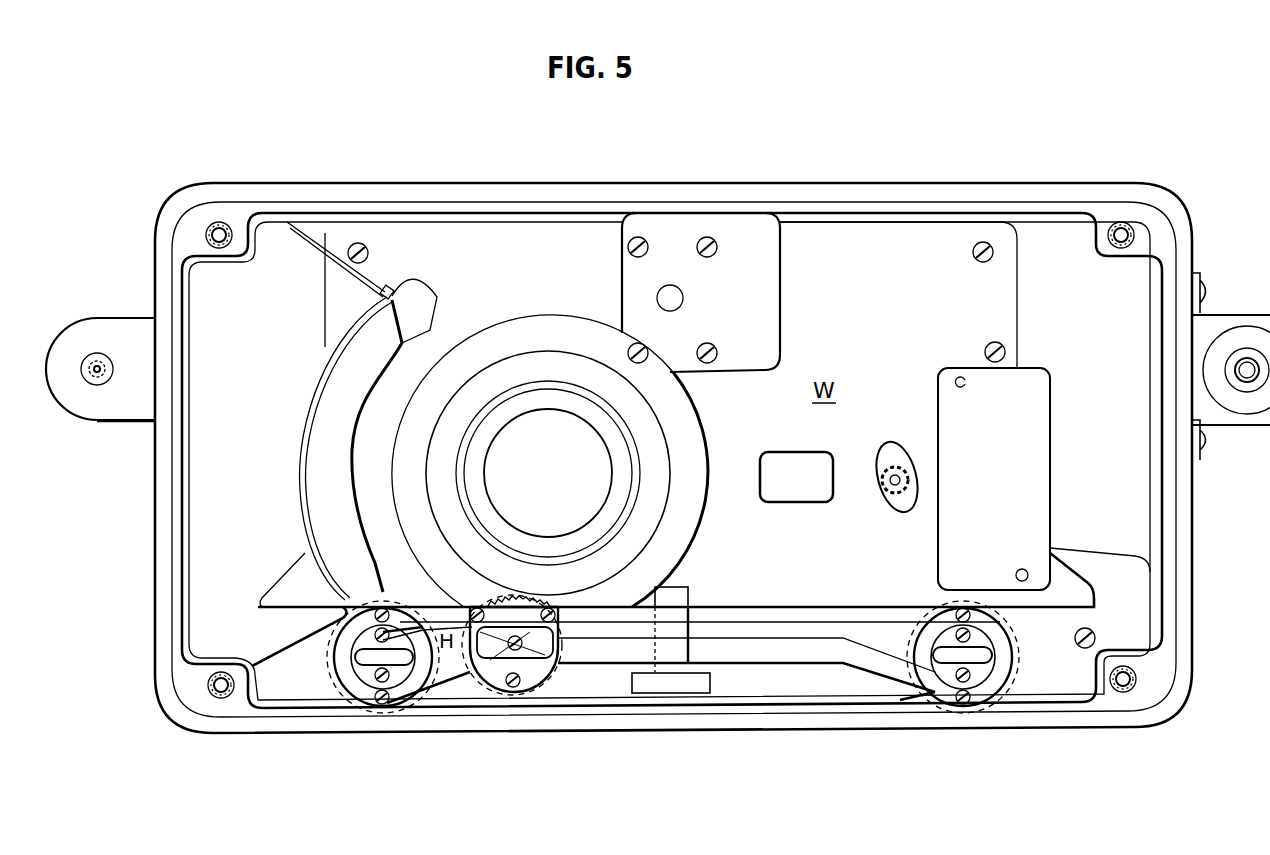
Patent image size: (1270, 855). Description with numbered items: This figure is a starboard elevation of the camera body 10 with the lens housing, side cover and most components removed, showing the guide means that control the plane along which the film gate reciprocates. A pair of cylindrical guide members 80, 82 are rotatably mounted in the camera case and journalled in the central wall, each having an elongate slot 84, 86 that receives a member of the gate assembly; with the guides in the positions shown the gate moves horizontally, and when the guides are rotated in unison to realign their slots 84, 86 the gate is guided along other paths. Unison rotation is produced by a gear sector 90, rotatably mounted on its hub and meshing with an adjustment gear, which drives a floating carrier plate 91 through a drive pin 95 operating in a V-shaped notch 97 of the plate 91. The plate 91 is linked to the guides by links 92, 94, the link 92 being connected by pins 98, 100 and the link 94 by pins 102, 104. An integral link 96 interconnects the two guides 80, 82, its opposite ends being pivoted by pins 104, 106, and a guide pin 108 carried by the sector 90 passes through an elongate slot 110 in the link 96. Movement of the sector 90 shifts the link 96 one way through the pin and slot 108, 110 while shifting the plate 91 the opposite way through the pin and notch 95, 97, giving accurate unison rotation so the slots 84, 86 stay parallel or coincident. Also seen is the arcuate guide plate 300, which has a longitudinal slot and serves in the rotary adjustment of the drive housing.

The camera body 10 is at (806, 176).
The arcuate guide plate 300 is at (297, 489).
The cylindrical guide member 80 is at (393, 637).
The cylindrical guide member 82 is at (978, 640).
The elongate slot 84 is at (363, 657).
The elongate slot 86 is at (955, 695).
The gear sector 90 is at (523, 597).
The carrier plate 91 is at (553, 676).
The link 92 is at (437, 612).
The link 94 is at (768, 615).
The drive pin 95 is at (518, 693).
The integral link 96 is at (770, 652).
The V-shaped notch 97 is at (497, 680).
The pin 98 is at (381, 608).
The pin 100 is at (478, 607).
The pin 102 is at (963, 610).
The pin 104 is at (383, 704).
The pin 106 is at (966, 705).
The guide pin 108 is at (540, 640).
The elongate slot 110 is at (523, 657).